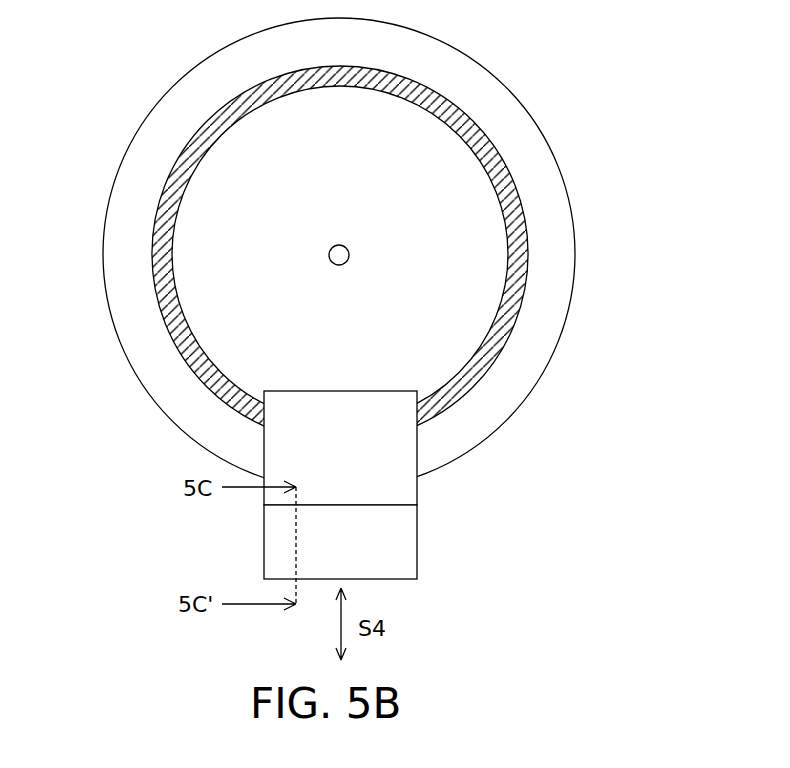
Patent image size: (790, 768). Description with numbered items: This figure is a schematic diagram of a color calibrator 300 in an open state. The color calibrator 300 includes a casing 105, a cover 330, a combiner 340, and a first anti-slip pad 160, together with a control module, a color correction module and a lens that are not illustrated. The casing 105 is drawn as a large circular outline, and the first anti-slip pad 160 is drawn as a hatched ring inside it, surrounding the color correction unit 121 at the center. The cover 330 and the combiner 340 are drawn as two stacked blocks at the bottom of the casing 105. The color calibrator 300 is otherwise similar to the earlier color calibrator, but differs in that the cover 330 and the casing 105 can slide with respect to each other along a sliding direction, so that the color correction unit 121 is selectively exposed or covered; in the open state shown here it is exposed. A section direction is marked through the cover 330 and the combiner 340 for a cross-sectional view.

The color calibrator 300 is at (373, 296).
The casing 105 is at (577, 255).
The first anti-slip pad 160 is at (453, 115).
The color correction unit 121 is at (346, 262).
The cover 330 is at (395, 452).
The combiner 340 is at (400, 545).